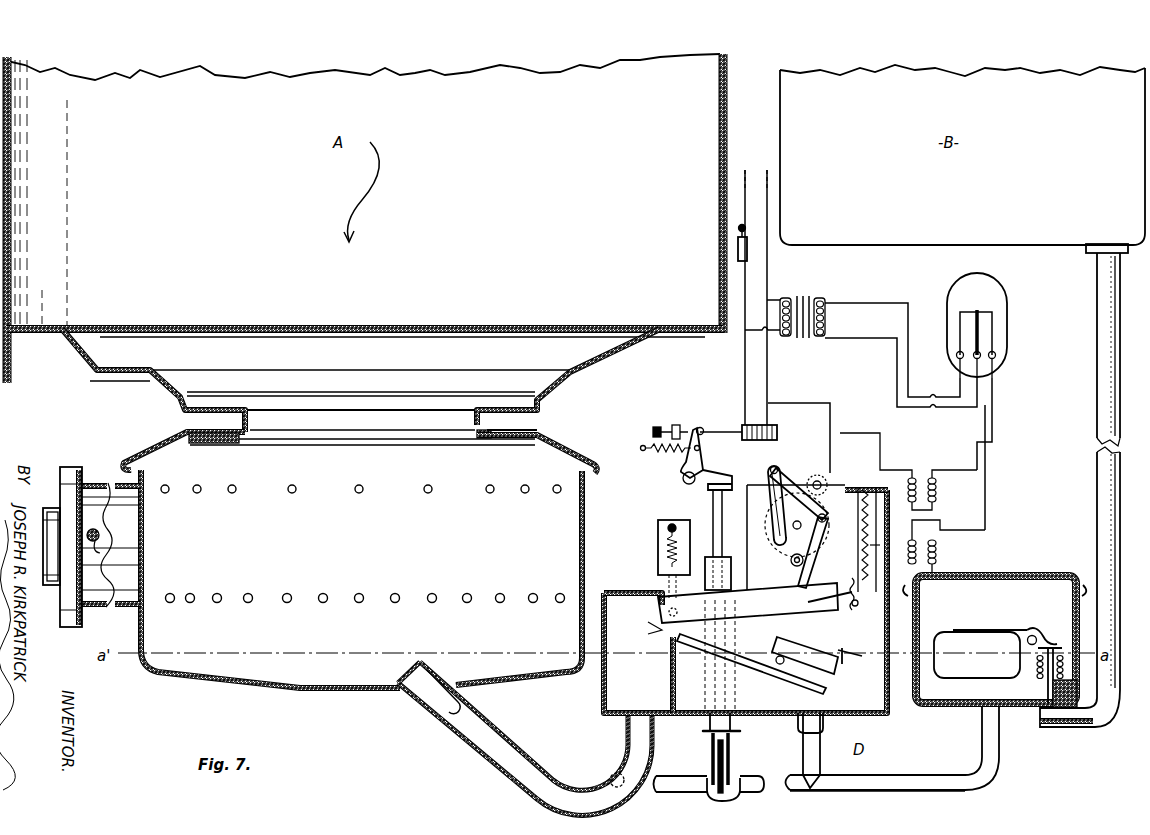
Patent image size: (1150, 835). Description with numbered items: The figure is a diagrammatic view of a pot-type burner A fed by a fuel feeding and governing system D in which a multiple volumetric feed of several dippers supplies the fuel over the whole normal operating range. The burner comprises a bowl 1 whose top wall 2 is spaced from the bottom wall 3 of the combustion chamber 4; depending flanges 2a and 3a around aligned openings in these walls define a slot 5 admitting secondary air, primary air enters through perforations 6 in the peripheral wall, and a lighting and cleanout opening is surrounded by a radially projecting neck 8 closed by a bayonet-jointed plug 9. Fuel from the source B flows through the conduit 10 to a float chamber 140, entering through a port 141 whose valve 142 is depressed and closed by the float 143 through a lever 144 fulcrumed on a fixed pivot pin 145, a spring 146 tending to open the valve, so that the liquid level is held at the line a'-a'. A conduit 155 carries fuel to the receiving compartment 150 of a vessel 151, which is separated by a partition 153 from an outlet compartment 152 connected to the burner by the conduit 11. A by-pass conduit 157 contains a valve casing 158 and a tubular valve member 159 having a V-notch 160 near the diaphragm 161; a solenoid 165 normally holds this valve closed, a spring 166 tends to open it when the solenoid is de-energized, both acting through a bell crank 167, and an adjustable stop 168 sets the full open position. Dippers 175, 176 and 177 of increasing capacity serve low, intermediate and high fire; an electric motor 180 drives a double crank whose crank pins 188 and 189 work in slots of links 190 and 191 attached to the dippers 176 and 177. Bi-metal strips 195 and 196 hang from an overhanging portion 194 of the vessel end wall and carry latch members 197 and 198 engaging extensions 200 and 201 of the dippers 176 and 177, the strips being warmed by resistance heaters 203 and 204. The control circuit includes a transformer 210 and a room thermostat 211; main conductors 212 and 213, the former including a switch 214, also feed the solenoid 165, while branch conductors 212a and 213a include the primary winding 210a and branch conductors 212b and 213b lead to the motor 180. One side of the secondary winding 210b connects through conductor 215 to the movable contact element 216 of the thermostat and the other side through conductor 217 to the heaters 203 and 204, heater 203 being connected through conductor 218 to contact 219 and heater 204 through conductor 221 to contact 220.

The bowl 1 is at (594, 528).
The top wall 2 is at (550, 447).
The depending flange 2a is at (488, 440).
The bottom wall 3 is at (556, 388).
The depending flange 3a is at (476, 436).
The combustion chamber 4 is at (722, 207).
The slot 5 is at (240, 441).
The perforations 6 is at (322, 594).
The neck 8 is at (125, 612).
The plug 9 is at (95, 490).
The conduit 10 is at (1105, 375).
The conduit 11 is at (465, 737).
The float chamber 140 is at (972, 600).
The port 141 is at (1040, 716).
The valve 142 is at (1048, 680).
The float 143 is at (977, 655).
The lever 144 is at (1055, 632).
The pivot pin 145 is at (1027, 639).
The spring 146 is at (1038, 656).
The receiving compartment 150 is at (748, 656).
The vessel 151 is at (623, 607).
The outlet compartment 152 is at (745, 599).
The partition 153 is at (668, 660).
The conduit 155 is at (905, 770).
The conduit 157 is at (740, 780).
The valve casing 158 is at (707, 768).
The valve member 159 is at (733, 742).
The V-notch 160 is at (706, 798).
The diaphragm 161 is at (742, 798).
The solenoid 165 is at (745, 430).
The spring 166 is at (692, 452).
The bell crank 167 is at (703, 470).
The adjustable stop 168 is at (688, 427).
The dipper 175 is at (816, 682).
The dipper 176 is at (825, 634).
The dipper 177 is at (748, 603).
The electric motor 180 is at (812, 473).
The crank pin 188 is at (826, 520).
The crank pin 189 is at (770, 471).
The connecting rod 190 is at (797, 525).
The connecting rod 191 is at (790, 570).
The overhanging portion 194 is at (860, 488).
The thermostatic element 195 is at (912, 592).
The thermostatic element 196 is at (870, 546).
The latch member 197 is at (855, 608).
The latch member 198 is at (840, 594).
The extension 200 is at (842, 655).
The extension 201 is at (850, 580).
The electric heater 203 is at (880, 533).
The electric heater 204 is at (860, 500).
The transformer 210 is at (801, 307).
The primary winding 210a is at (791, 330).
The secondary winding 210b is at (841, 317).
The room thermostat 211 is at (988, 279).
The conductor 212 is at (745, 182).
The conductor 212a is at (750, 328).
The conductor 212b is at (805, 434).
The conductor 213 is at (768, 205).
The conductor 213a is at (778, 300).
The conductor 213b is at (840, 435).
The switch 214 is at (733, 253).
The conductor 215 is at (855, 303).
The movable contact element 216 is at (990, 341).
The conductor 217 is at (897, 380).
The conductor 218 is at (930, 472).
The contact 219 is at (959, 321).
The contact 220 is at (992, 321).
The conductor 221 is at (993, 404).